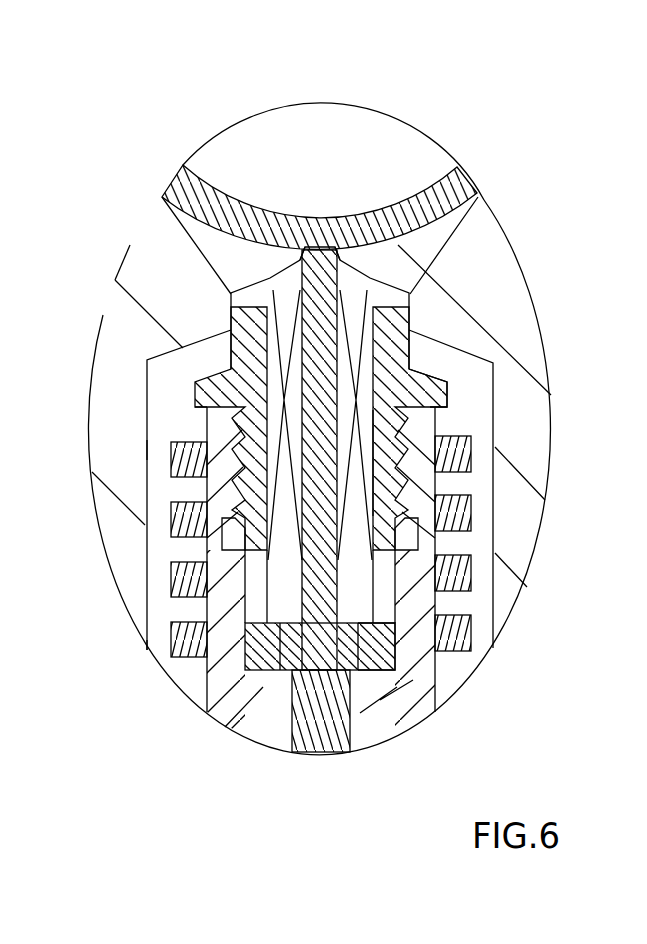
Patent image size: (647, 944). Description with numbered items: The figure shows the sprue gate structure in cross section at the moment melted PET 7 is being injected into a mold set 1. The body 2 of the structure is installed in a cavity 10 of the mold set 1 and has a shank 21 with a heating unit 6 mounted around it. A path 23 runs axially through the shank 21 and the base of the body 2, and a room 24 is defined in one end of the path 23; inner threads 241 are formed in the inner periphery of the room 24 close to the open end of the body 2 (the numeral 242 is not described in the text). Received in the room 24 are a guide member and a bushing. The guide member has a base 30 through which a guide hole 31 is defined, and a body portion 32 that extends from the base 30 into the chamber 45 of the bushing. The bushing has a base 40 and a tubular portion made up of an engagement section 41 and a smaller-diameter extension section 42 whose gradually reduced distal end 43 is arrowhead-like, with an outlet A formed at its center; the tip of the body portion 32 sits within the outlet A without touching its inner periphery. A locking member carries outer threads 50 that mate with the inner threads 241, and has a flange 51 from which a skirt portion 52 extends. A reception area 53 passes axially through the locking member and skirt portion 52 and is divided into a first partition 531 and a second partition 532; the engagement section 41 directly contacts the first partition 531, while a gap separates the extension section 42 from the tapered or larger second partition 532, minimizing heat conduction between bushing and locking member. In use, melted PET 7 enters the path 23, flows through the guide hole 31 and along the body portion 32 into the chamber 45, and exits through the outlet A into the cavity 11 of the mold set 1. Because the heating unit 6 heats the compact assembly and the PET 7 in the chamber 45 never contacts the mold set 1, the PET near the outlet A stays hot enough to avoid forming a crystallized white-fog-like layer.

The mold set 1 is at (140, 270).
The body 2 is at (248, 727).
The heating unit 6 is at (168, 652).
The PET 7 is at (185, 187).
The cavity 10 is at (157, 460).
The cavity 11 is at (410, 187).
The shank 21 is at (207, 488).
The path 23 is at (313, 737).
The room 24 is at (240, 708).
The base 30 is at (440, 708).
The guide hole 31 is at (343, 700).
The body portion 32 is at (397, 582).
The base 40 is at (405, 583).
The engagement section 41 is at (321, 484).
The extension section 42 is at (411, 318).
The distal end 43 is at (290, 290).
The chamber 45 is at (350, 403).
The outer threads 50 is at (462, 432).
The flange 51 is at (448, 394).
The skirt portion 52 is at (411, 320).
The reception area 53 is at (319, 460).
The first partition 531 is at (378, 490).
The second partition 532 is at (479, 197).
The inner threads 241 is at (207, 422).
The sleeve ledge 242 is at (232, 540).
The outlet A is at (303, 243).